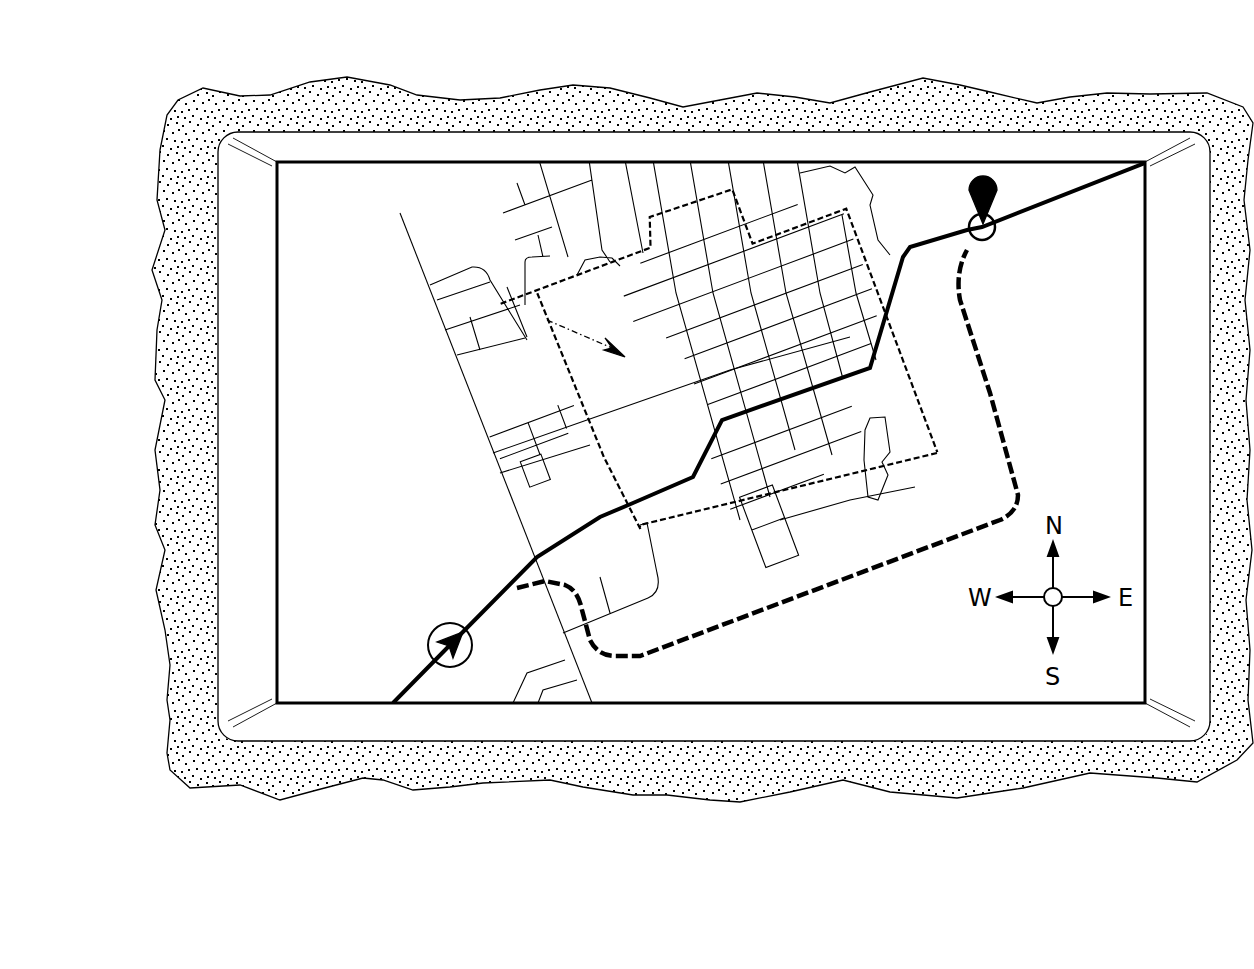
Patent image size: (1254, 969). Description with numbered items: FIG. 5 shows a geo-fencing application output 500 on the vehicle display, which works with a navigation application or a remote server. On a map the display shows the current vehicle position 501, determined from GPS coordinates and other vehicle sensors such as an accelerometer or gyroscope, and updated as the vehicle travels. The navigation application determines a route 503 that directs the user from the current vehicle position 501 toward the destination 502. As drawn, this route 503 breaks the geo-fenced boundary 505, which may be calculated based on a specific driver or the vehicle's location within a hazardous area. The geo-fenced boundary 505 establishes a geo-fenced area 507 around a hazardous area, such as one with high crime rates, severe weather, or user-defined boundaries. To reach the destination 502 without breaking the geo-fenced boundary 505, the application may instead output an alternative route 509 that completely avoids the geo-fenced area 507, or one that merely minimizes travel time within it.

The navigation device display 500 is at (868, 64).
The current vehicle position 501 is at (445, 622).
The destination 502 is at (993, 240).
The route 503 is at (603, 520).
The geo-fenced boundary 505 is at (492, 438).
The geo-fenced area 507 is at (547, 320).
The alternative route 509 is at (810, 593).